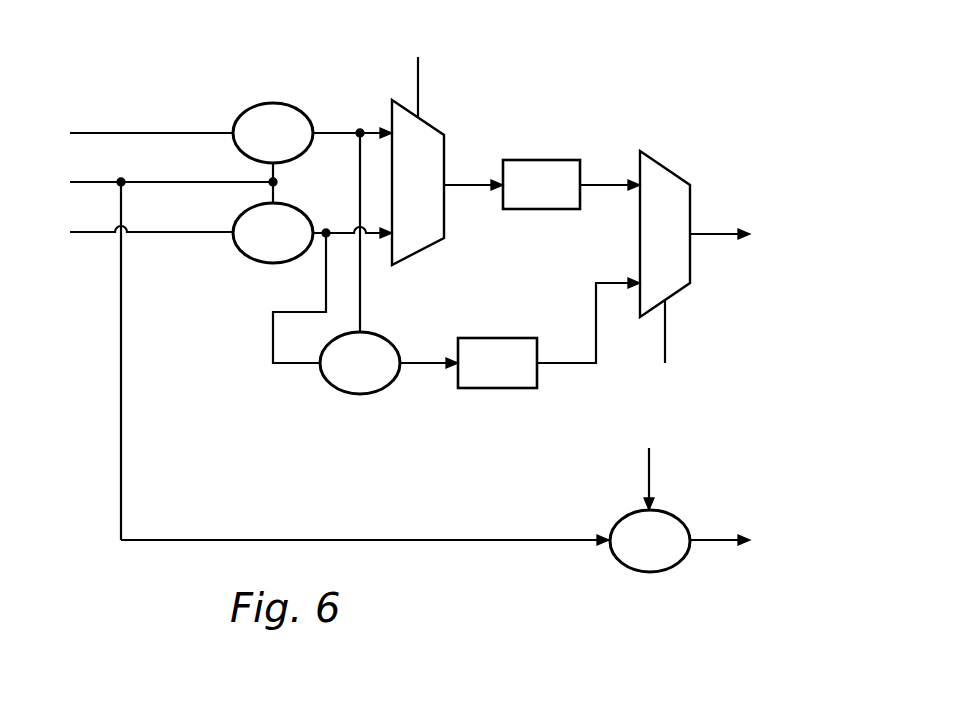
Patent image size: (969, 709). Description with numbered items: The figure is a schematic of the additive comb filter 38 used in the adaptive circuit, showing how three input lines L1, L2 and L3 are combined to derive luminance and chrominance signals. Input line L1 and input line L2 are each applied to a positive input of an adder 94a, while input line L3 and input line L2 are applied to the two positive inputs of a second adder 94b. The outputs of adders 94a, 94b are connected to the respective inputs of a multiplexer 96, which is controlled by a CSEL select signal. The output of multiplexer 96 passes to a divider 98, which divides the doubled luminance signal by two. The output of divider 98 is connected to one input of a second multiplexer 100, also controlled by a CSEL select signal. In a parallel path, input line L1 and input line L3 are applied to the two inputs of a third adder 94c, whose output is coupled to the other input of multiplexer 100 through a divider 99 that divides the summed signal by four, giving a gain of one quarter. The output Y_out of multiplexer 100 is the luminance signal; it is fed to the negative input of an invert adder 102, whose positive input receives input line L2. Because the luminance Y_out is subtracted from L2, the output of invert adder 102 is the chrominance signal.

The additive comb filter 38 is at (152, 70).
The adder 94a is at (306, 104).
The adder 94b is at (238, 256).
The adder 94c is at (325, 386).
The multiplexer 96 is at (444, 150).
The divider 98 is at (553, 160).
The divider 99 is at (508, 338).
The multiplexer 100 is at (691, 200).
The invert adder 102 is at (616, 560).